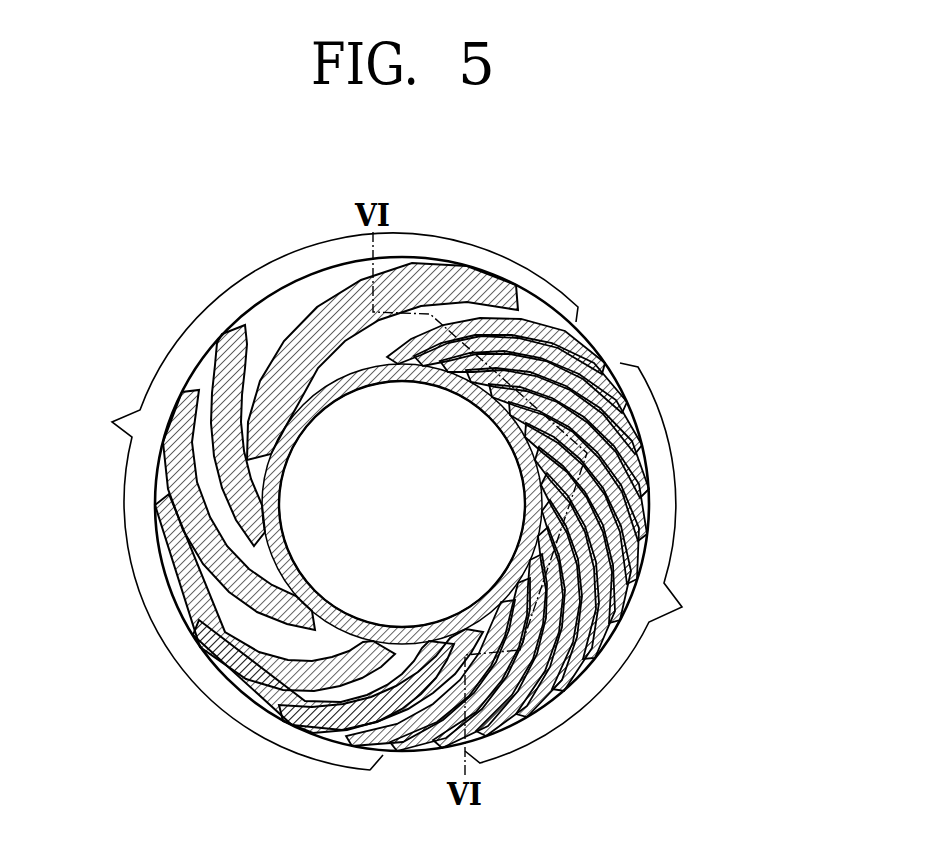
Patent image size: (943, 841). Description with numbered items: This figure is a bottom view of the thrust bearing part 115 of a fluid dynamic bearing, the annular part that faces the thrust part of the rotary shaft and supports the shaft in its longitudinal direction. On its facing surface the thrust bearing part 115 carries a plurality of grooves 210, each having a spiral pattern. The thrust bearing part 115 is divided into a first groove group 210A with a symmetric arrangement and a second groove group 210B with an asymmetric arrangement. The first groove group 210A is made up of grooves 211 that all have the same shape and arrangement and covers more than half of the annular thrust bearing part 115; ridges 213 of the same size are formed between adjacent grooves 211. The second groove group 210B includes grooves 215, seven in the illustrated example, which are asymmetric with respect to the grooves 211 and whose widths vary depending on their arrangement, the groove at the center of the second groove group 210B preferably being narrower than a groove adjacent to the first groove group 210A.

The thrust bearing part 115 is at (628, 314).
The grooves 210 is at (512, 308).
The first groove group 210A is at (311, 501).
The second groove group 210B is at (553, 540).
The grooves 211 is at (200, 382).
The ridges 213 is at (162, 553).
The grooves 215 is at (623, 453).